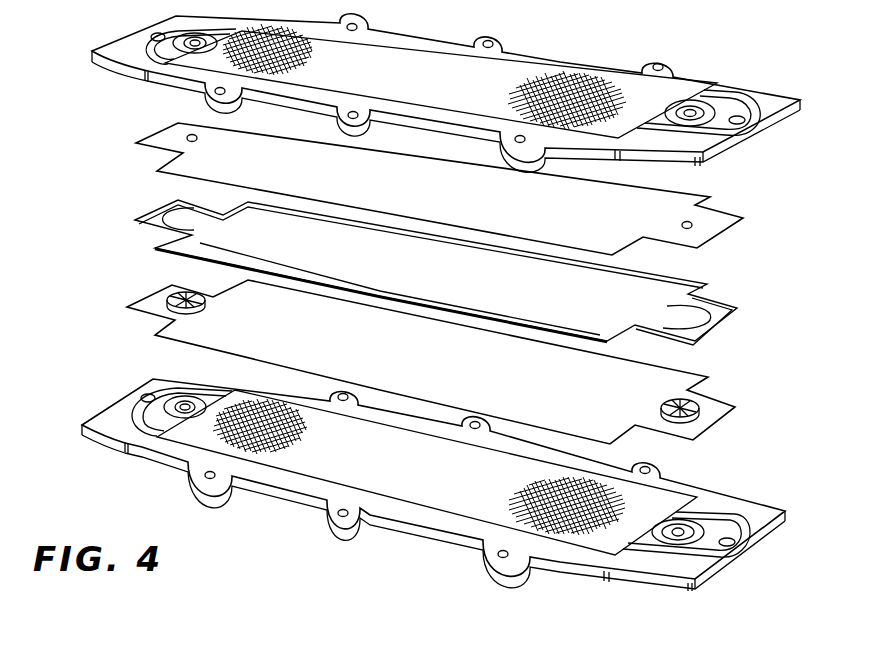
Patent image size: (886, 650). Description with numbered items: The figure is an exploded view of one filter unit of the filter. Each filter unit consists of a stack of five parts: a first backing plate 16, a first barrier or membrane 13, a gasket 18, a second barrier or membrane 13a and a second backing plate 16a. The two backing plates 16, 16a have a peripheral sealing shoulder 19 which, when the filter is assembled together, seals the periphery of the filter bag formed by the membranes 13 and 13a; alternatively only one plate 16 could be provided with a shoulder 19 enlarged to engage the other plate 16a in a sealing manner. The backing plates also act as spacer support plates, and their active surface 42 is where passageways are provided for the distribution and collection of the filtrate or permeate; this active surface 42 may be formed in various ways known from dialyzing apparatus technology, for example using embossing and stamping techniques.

The first backing plate 16 is at (770, 93).
The second backing plate 16a is at (765, 502).
The peripheral sealing shoulder 19 is at (594, 64).
The active surface 42 is at (419, 279).
The first barrier or membrane 13 is at (739, 209).
The gasket 18 is at (739, 300).
The second barrier or membrane 13a is at (726, 400).